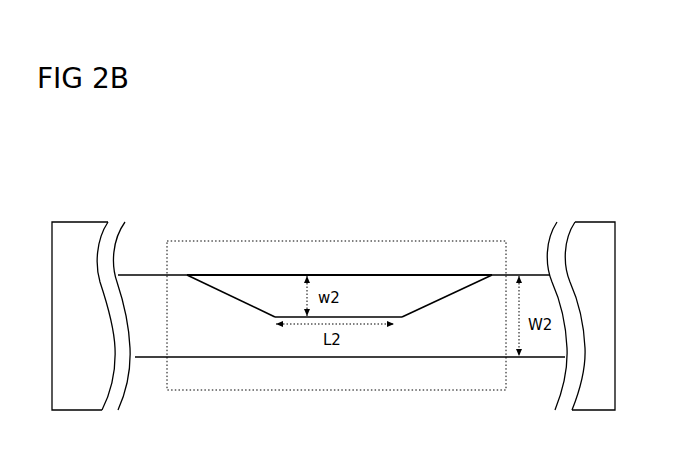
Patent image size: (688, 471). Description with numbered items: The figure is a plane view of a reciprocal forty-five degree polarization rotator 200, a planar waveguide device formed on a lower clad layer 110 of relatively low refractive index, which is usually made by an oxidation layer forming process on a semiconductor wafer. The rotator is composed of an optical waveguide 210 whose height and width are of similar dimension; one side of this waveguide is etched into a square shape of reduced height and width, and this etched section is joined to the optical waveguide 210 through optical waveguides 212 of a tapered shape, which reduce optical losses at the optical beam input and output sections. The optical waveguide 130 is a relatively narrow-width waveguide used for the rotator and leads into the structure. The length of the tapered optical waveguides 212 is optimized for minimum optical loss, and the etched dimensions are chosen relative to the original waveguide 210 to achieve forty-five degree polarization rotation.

The lower clad layer 110 is at (333, 316).
The optical waveguide 130 is at (341, 316).
The reciprocal 45° polarization rotator 200 is at (339, 227).
The optical waveguide 210 is at (336, 315).
The optical waveguides of a tapered shape 212 is at (236, 276).